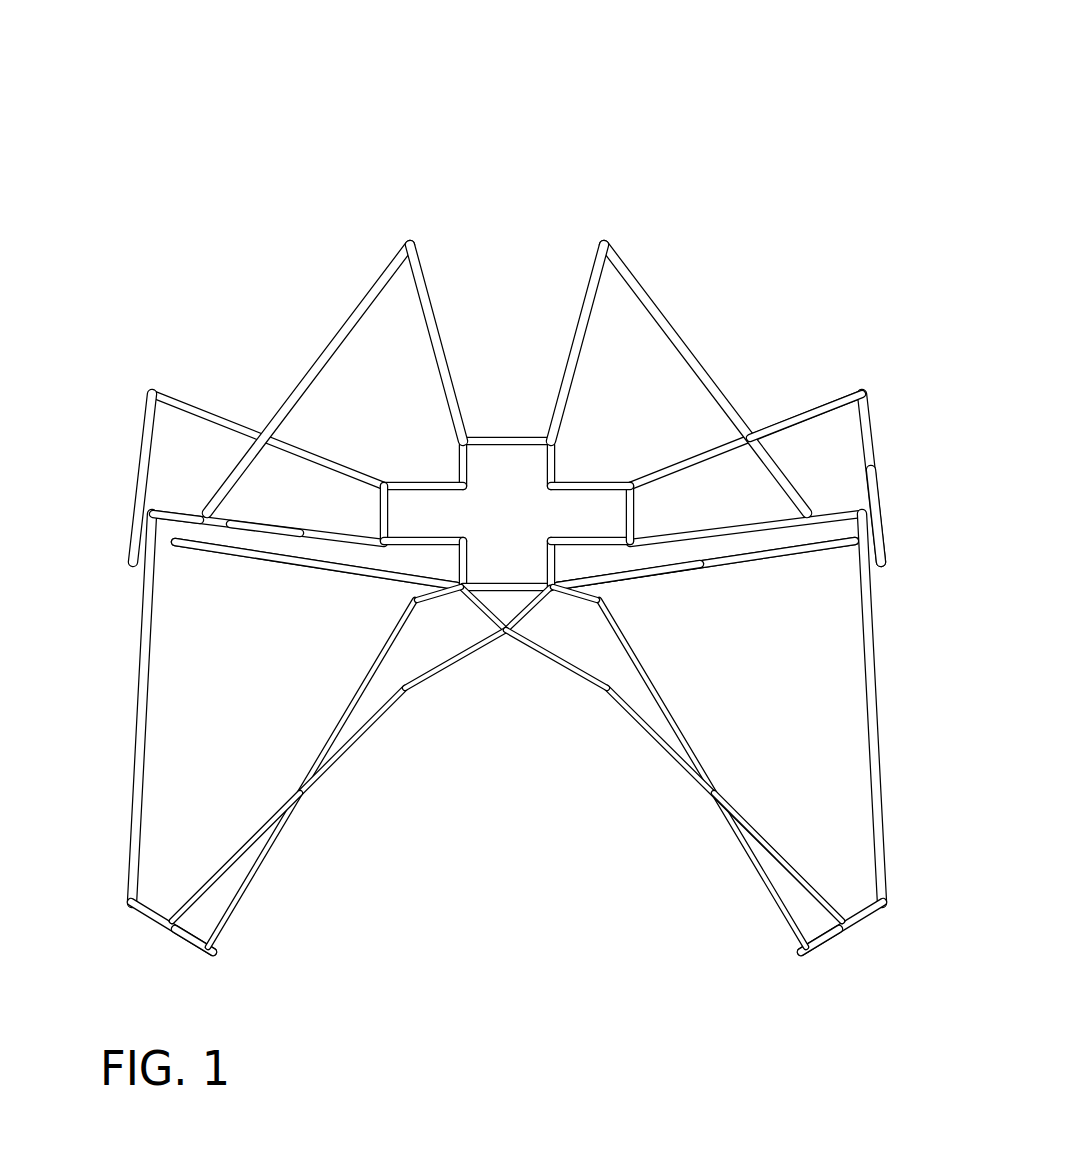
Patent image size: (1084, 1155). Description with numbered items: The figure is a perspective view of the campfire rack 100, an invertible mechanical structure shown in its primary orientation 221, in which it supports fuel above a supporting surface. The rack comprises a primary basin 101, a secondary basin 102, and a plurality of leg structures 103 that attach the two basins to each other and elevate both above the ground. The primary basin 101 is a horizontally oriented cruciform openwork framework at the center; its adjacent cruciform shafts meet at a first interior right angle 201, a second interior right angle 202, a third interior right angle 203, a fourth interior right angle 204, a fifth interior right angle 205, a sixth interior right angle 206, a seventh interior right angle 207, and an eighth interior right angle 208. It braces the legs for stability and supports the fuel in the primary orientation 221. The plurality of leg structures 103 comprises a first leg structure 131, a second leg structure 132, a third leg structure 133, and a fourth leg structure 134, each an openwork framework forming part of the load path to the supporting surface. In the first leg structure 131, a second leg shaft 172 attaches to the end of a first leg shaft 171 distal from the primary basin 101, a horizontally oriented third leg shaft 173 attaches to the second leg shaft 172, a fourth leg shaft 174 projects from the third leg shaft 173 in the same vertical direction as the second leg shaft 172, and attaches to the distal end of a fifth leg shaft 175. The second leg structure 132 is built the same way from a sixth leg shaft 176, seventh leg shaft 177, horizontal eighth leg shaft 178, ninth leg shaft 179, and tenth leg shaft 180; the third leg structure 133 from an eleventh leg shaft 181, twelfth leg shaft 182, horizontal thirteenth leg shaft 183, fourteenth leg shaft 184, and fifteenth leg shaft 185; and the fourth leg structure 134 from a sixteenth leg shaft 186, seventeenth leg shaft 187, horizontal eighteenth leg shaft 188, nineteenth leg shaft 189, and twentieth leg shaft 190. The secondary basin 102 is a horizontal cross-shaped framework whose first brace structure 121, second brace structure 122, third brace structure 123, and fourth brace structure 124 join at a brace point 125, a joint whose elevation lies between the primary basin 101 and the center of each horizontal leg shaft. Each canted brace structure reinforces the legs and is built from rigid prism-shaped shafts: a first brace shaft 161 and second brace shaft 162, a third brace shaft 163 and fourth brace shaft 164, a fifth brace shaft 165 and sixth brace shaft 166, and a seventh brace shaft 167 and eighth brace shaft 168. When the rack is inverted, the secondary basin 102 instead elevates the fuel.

The campfire rack 100 is at (193, 173).
The primary basin 101 is at (491, 488).
The secondary basin 102 is at (500, 703).
The plurality of leg structures 103 is at (580, 252).
The first brace structure 121 is at (280, 567).
The second brace structure 122 is at (690, 577).
The third brace structure 123 is at (670, 770).
The fourth brace structure 124 is at (335, 785).
The brace point 125 is at (507, 645).
The first leg structure 131 is at (332, 366).
The second leg structure 132 is at (657, 361).
The third leg structure 133 is at (855, 925).
The fourth leg structure 134 is at (130, 915).
The first brace shaft 161 is at (220, 558).
The second brace shaft 162 is at (412, 578).
The third brace shaft 163 is at (758, 558).
The fourth brace shaft 164 is at (600, 592).
The fifth brace shaft 165 is at (780, 858).
The sixth brace shaft 166 is at (583, 683).
The seventh brace shaft 167 is at (230, 860).
The eighth brace shaft 168 is at (453, 670).
The first leg shaft 171 is at (330, 460).
The second leg shaft 172 is at (146, 478).
The third leg shaft 173 is at (178, 520).
The fourth leg shaft 174 is at (287, 407).
The fifth leg shaft 175 is at (427, 337).
The sixth leg shaft 176 is at (563, 346).
The seventh leg shaft 177 is at (650, 297).
The eighth leg shaft 178 is at (877, 532).
The ninth leg shaft 179 is at (878, 448).
The tenth leg shaft 180 is at (808, 410).
The eleventh leg shaft 181 is at (728, 527).
The twelfth leg shaft 182 is at (870, 630).
The thirteenth leg shaft 183 is at (818, 945).
The fourteenth leg shaft 184 is at (682, 738).
The fifteenth leg shaft 185 is at (580, 600).
The sixteenth leg shaft 186 is at (432, 602).
The seventeenth leg shaft 187 is at (367, 681).
The eighteenth leg shaft 188 is at (182, 952).
The nineteenth leg shaft 189 is at (135, 790).
The twentieth leg shaft 190 is at (263, 515).
The first interior right angle 201 is at (397, 528).
The second interior right angle 202 is at (388, 488).
The third interior right angle 203 is at (470, 447).
The fourth interior right angle 204 is at (507, 537).
The fifth interior right angle 205 is at (627, 488).
The sixth interior right angle 206 is at (617, 530).
The seventh interior right angle 207 is at (540, 578).
The eighth interior right angle 208 is at (470, 578).
The primary orientation 221 is at (838, 142).